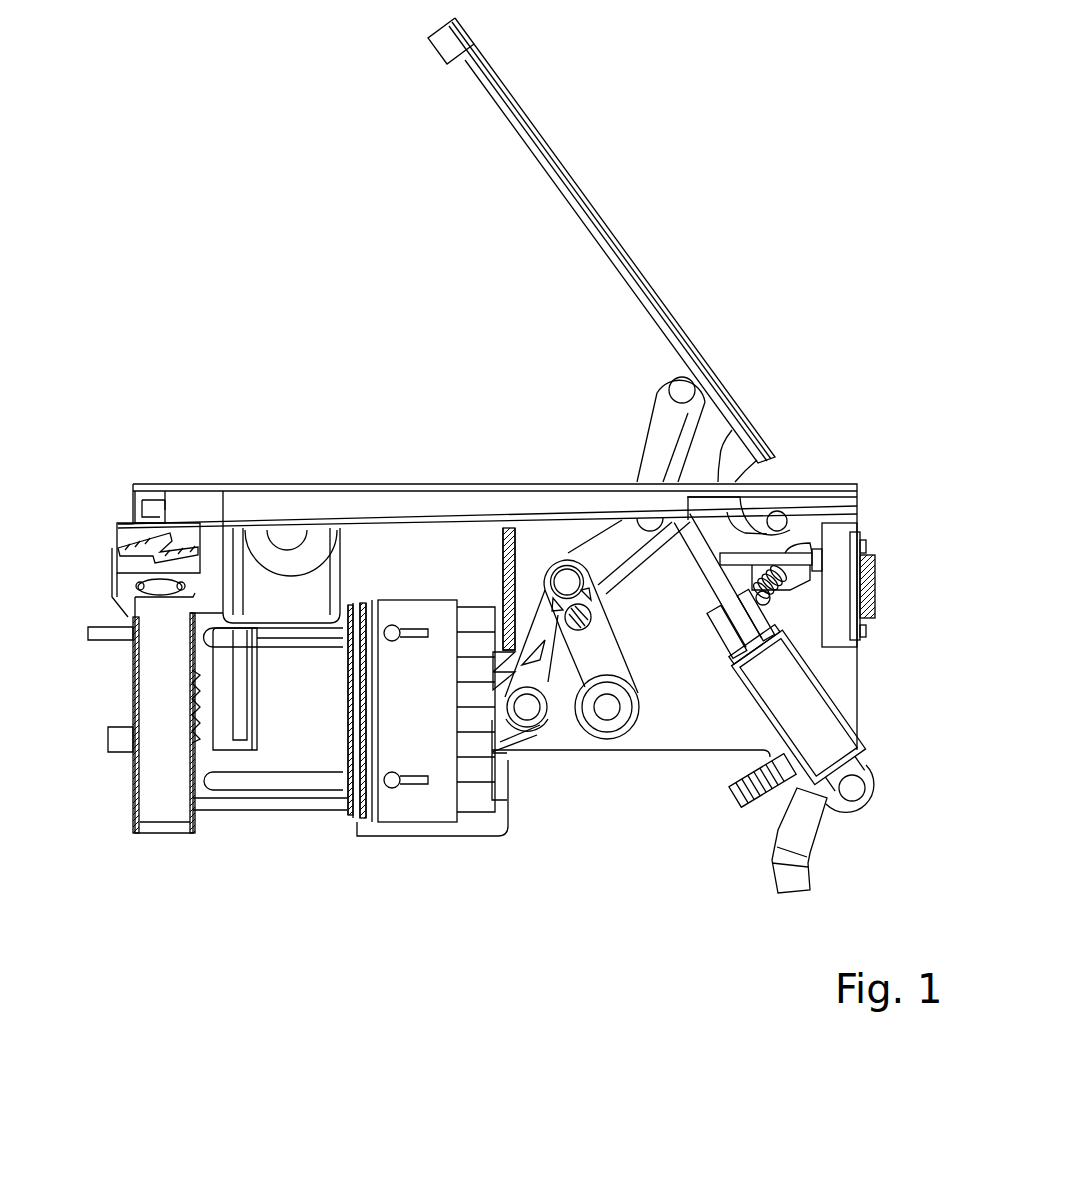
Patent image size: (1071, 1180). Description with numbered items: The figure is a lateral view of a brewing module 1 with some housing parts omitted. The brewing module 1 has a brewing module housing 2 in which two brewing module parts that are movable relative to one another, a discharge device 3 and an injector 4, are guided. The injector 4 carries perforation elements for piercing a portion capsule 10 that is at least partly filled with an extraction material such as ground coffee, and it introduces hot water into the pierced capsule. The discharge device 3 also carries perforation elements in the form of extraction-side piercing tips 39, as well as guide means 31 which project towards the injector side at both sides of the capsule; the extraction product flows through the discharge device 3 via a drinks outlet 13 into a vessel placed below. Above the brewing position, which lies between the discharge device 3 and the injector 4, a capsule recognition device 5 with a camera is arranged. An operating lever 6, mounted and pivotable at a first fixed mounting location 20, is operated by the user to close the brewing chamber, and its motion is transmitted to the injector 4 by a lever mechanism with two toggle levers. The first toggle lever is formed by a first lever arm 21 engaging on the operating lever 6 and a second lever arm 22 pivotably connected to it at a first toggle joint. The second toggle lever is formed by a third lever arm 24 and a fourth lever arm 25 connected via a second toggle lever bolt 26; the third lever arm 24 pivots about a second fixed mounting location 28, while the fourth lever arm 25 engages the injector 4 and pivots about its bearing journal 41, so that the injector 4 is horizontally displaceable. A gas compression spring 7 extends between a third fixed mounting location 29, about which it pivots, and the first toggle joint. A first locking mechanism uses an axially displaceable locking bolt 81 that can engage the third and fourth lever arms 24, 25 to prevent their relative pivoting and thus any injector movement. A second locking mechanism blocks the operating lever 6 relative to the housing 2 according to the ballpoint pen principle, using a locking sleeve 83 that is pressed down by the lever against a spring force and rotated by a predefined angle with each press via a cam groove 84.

The brewing module 1 is at (878, 517).
The brewing module housing 2 is at (207, 522).
The discharge device 3 is at (162, 787).
The injector 4 is at (428, 693).
The capsule recognition device 5 is at (835, 577).
The operating lever 6 is at (595, 218).
The gas compression spring 7 is at (802, 708).
The portion capsule 10 is at (278, 600).
The drinks outlet 13 is at (122, 738).
The first fixed mounting location 20 is at (780, 511).
The first lever arm 21 is at (670, 433).
The second lever arm 22 is at (608, 552).
The third lever arm 24 is at (587, 663).
The fourth lever arm 25 is at (549, 611).
The second toggle lever bolt 26 is at (567, 574).
The second fixed mounting location 28 is at (607, 708).
The third fixed mounting location 29 is at (860, 787).
The guide means 31 is at (233, 665).
The extraction-side piercing tips 39 is at (200, 742).
The bearing journal 41 is at (533, 727).
The locking bolt 81 is at (538, 657).
The locking sleeve 83 is at (127, 503).
The cam groove 84 is at (113, 542).